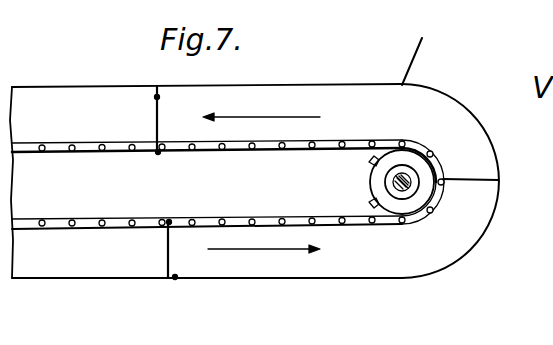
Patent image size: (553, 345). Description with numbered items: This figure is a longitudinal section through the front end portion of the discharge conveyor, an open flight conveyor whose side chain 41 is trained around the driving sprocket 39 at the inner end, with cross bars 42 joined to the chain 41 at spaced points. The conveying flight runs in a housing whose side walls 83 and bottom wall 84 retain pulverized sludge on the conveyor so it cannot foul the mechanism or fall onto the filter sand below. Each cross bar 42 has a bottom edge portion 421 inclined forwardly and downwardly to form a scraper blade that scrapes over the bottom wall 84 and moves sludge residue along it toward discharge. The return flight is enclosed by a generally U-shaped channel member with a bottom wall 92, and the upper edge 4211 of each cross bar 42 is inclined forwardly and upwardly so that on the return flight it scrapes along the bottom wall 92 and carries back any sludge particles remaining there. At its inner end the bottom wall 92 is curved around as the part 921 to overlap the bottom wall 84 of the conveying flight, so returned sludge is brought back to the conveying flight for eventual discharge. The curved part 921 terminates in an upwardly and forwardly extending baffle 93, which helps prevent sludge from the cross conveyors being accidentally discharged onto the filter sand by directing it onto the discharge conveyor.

The driving sprocket 39 is at (373, 183).
The side chain 41 is at (237, 218).
The cross bar 42 is at (156, 98).
The bottom edge portion 421 is at (158, 153).
The upper edge 4211 is at (159, 95).
The side wall 83 is at (206, 181).
The bottom wall 84 is at (82, 188).
The bottom wall 92 is at (85, 279).
The curved bottom wall part 921 is at (500, 180).
The baffle 93 is at (410, 67).